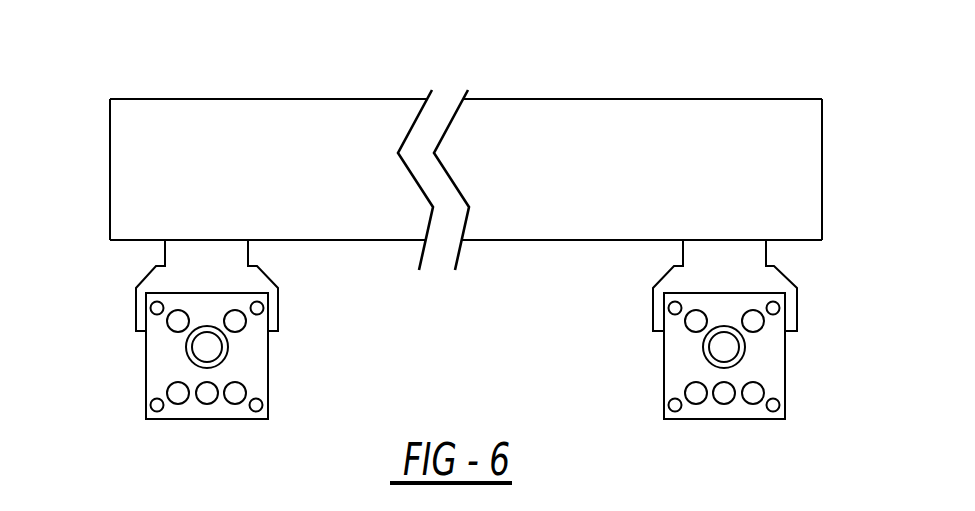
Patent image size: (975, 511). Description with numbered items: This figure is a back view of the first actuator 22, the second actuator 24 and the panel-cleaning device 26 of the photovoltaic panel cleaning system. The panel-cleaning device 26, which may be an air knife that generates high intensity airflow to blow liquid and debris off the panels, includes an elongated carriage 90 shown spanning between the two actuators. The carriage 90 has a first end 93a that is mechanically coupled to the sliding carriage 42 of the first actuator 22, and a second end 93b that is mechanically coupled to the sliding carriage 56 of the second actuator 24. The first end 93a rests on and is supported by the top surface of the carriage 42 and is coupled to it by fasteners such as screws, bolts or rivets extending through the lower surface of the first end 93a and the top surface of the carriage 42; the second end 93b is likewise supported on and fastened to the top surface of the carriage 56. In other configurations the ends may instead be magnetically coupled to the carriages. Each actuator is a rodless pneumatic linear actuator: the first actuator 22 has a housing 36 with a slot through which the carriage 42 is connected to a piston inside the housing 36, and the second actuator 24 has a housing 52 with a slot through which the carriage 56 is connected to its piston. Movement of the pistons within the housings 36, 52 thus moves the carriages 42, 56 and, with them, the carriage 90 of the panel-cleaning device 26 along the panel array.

The panel-cleaning device 26 is at (468, 139).
The carriage 90 is at (468, 127).
The first end 93a is at (121, 99).
The second end 93b is at (810, 99).
The first actuator 22 is at (219, 329).
The second actuator 24 is at (718, 337).
The carriage 42 is at (141, 283).
The carriage 56 is at (786, 278).
The housing 36 is at (148, 356).
The housing 52 is at (773, 363).